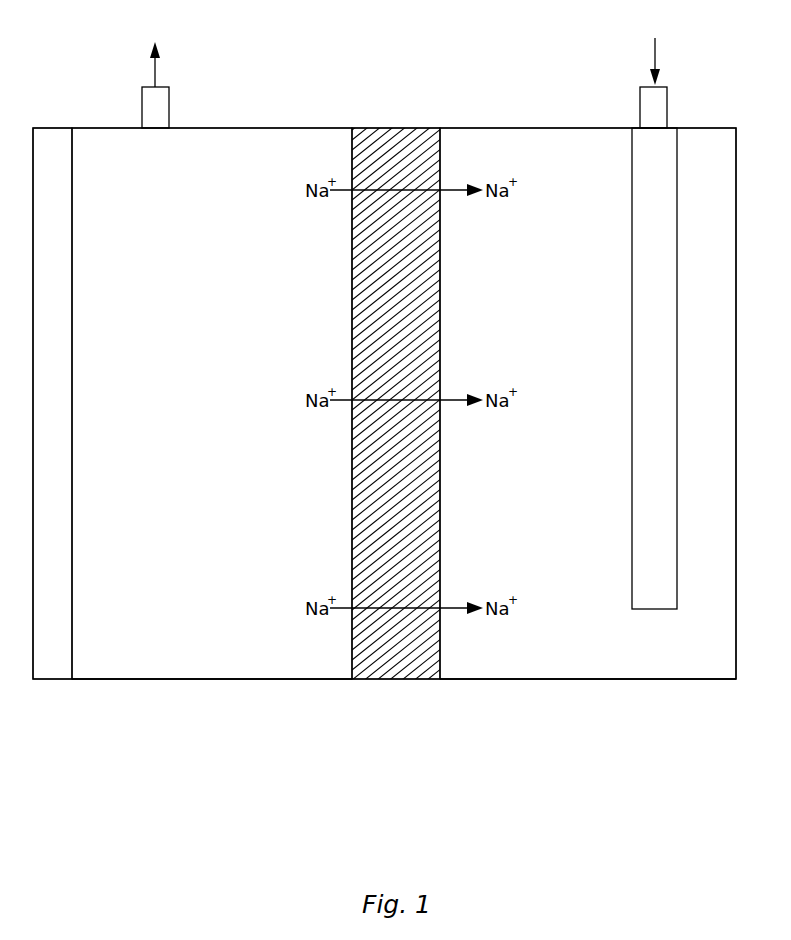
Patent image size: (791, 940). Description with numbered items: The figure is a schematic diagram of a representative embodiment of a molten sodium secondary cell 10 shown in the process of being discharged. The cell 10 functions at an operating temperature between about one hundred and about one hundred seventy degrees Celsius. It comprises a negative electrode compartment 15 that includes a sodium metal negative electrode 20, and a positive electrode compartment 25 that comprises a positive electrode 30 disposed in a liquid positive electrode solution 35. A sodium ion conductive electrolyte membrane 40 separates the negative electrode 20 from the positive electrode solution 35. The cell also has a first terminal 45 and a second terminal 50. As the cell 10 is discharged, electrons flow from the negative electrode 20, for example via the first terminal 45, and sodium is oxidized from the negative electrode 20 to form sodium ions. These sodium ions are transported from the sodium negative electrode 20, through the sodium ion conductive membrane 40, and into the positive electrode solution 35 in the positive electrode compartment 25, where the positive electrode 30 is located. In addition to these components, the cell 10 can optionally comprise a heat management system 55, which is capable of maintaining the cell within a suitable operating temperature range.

The molten sodium secondary cell 10 is at (397, 73).
The negative electrode compartment 15 is at (197, 680).
The sodium metal negative electrode 20 is at (214, 338).
The positive electrode compartment 25 is at (587, 680).
The positive electrode 30 is at (665, 338).
The liquid positive electrode solution 35 is at (551, 338).
The sodium ion conductive electrolyte membrane 40 is at (395, 680).
The first terminal 45 is at (142, 115).
The second terminal 50 is at (667, 113).
The heat management system 55 is at (64, 338).